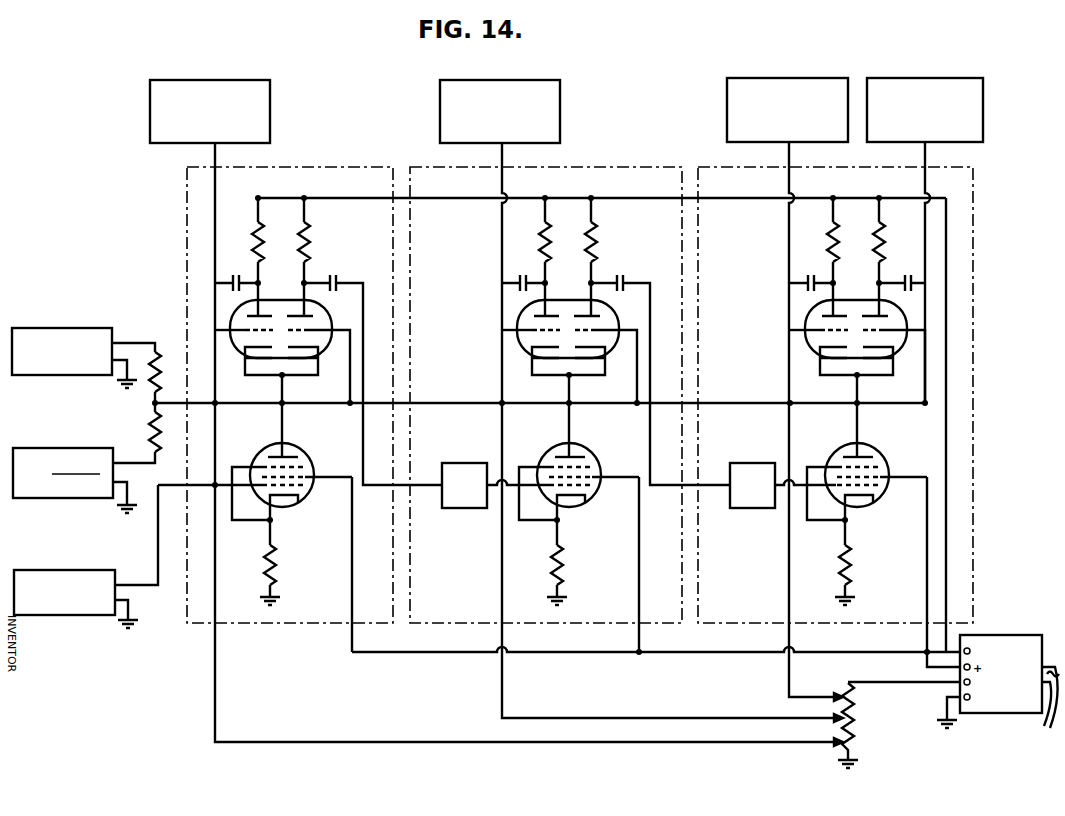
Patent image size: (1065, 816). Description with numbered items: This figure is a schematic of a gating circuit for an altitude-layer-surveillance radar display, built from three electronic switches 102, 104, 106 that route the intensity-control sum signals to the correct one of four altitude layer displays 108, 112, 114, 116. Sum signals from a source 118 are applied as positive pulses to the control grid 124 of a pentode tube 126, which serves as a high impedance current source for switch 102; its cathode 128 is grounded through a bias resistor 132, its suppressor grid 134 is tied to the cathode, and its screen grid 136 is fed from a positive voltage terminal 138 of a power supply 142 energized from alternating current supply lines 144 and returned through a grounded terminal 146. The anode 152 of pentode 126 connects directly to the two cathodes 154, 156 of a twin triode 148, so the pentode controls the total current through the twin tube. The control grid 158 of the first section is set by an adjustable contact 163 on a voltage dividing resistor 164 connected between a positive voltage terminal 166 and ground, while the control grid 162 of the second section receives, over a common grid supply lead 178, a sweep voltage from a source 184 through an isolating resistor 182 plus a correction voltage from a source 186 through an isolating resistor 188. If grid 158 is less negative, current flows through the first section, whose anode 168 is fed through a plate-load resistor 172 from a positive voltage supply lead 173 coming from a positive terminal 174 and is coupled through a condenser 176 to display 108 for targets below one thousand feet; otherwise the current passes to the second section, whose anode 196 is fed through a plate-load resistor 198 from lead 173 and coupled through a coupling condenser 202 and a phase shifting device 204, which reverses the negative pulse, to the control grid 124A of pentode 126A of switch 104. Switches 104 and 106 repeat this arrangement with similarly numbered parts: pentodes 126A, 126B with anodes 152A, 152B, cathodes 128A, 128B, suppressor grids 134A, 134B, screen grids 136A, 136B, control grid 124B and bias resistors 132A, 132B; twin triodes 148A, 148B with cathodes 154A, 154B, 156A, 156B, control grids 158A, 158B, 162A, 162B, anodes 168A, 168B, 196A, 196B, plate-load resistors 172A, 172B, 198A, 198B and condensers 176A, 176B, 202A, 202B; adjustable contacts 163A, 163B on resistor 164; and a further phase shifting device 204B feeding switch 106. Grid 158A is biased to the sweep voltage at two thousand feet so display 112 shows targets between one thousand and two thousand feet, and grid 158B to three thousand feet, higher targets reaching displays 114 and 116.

The altitude layer display 108 is at (218, 80).
The altitude layer display 112 is at (503, 80).
The altitude layer display 114 is at (766, 78).
The altitude layer display 116 is at (908, 78).
The electronic switch 102 is at (301, 166).
The electronic switch 104 is at (588, 166).
The electronic switch 106 is at (849, 166).
The plate-load resistor 172 is at (254, 240).
The plate resistor 172A is at (527, 240).
The plate resistor 172B is at (815, 240).
The plate-load resistor 198 is at (307, 242).
The plate resistor 198A is at (609, 240).
The plate resistor 198B is at (897, 240).
The condenser 176 is at (235, 277).
The coupling capacitor 176A is at (523, 274).
The coupling capacitor 176B is at (811, 274).
The coupling condenser 202 is at (337, 277).
The coupling capacitor 202A is at (624, 274).
The coupling capacitor 202B is at (912, 274).
The twin triode vacuum tube 148 is at (280, 300).
The twin triode tube 148A is at (568, 319).
The twin triode vacuum tube 148B is at (856, 319).
The anode 168 is at (248, 314).
The anode 168A is at (517, 299).
The anode 168B is at (805, 299).
The anode 196 is at (313, 314).
The anode 196A is at (616, 299).
The anode 196B is at (904, 299).
The control grid 158 is at (246, 330).
The control grid 158A is at (517, 320).
The control grid 158B is at (805, 320).
The control grid 162 is at (310, 330).
The control grid 162A is at (616, 357).
The control grid 162B is at (904, 357).
The cathode 154 is at (265, 362).
The cathode 154A is at (543, 371).
The cathode 154B is at (831, 371).
The cathode 156 is at (300, 362).
The cathode 156A is at (590, 371).
The cathode 156B is at (878, 371).
The common grid supply lead 178 is at (305, 406).
The pentode vacuum tube 126 is at (274, 452).
The pentode tube 126A is at (557, 455).
The pentode tube 126B is at (845, 455).
The anode 152 is at (268, 458).
The anode 152A is at (544, 458).
The anode 152B is at (832, 458).
The suppressor grid 134 is at (303, 466).
The grid 134A is at (578, 478).
The grid 134B is at (866, 478).
The screen grid 136 is at (302, 477).
The grid 136A is at (596, 469).
The grid 136B is at (884, 469).
The control grid 124 is at (298, 490).
The control grid 124A is at (595, 498).
The cathode 124B is at (883, 498).
The cathode 128 is at (287, 504).
The cathode lead 128A is at (582, 514).
The cathode lead 128B is at (870, 514).
The bias resistor 132 is at (278, 560).
The cathode resistor 132A is at (579, 562).
The cathode resistor 132B is at (867, 562).
The phase shifting device 204 is at (462, 463).
The 180 degree phase shifter 204B is at (750, 463).
The source of sweep voltage 184 is at (62, 328).
The isolating resistor 182 is at (150, 388).
The isolating resistor 188 is at (152, 438).
The source 186 is at (50, 448).
The source 118 is at (57, 563).
The positive voltage supply lead 173 is at (948, 450).
The positive terminal 174 is at (972, 647).
The power supply 142 is at (1015, 633).
The positive voltage terminal 138 is at (962, 681).
The positive voltage terminal 166 is at (962, 697).
The grounded terminal 146 is at (955, 718).
The alternating current supply lines 144 is at (1047, 714).
The voltage dividing resistor 164 is at (855, 708).
The adjustable contact 163 is at (834, 745).
The potentiometer tap 163A is at (832, 718).
The potentiometer tap 163B is at (833, 697).